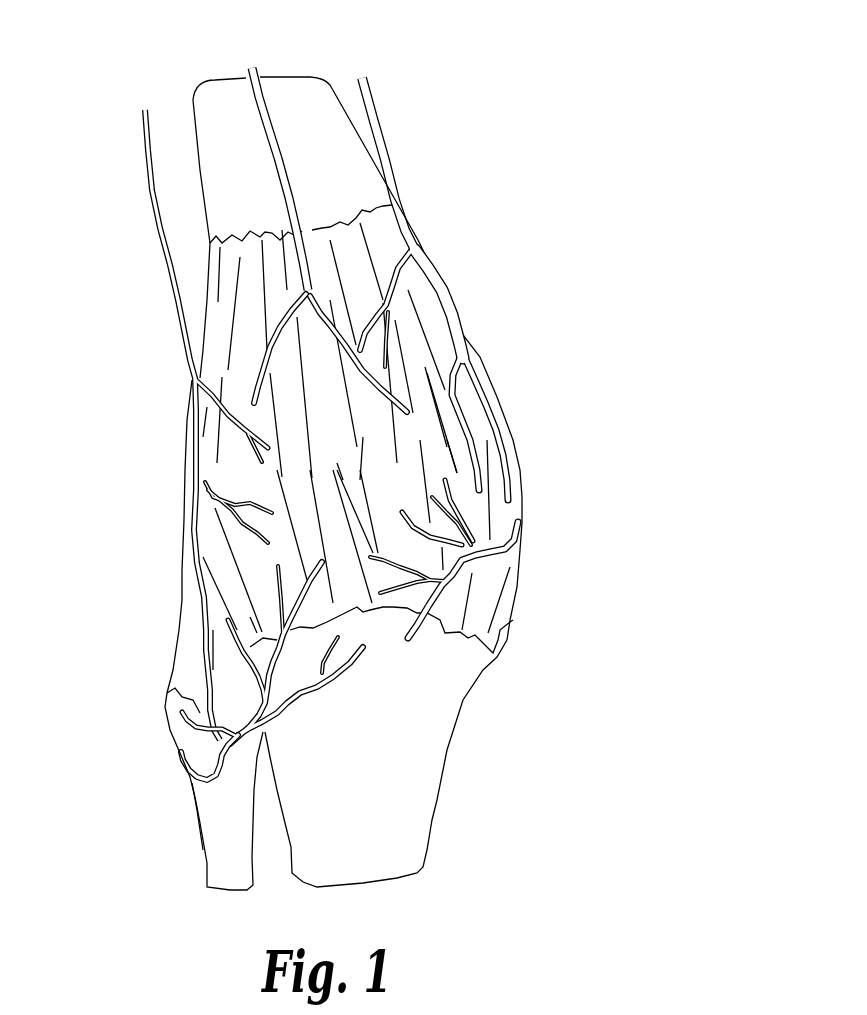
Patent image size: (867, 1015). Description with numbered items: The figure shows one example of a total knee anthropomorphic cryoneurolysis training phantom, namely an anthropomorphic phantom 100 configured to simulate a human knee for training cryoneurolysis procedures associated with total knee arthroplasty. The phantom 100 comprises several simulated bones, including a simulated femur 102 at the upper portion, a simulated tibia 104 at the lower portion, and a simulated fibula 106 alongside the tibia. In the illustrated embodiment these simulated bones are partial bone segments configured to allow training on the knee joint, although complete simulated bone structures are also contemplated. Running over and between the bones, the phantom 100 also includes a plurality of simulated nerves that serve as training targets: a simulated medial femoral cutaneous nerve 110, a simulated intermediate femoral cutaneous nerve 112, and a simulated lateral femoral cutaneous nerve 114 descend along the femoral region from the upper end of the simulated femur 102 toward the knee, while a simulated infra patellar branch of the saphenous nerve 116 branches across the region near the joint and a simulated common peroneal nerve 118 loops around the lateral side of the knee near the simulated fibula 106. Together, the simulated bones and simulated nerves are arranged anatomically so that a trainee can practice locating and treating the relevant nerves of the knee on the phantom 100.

The anthropomorphic phantom 100 is at (581, 247).
The simulated femur 102 is at (300, 98).
The simulated tibia 104 is at (395, 788).
The simulated fibula 106 is at (230, 862).
The simulated medial femoral cutaneous nerve 110 is at (397, 205).
The simulated intermediate femoral cutaneous nerve 112 is at (258, 97).
The simulated lateral femoral cutaneous nerve 114 is at (178, 300).
The simulated infra patellar branch of the saphenous nerve 116 is at (497, 555).
The simulated common peroneal nerve 118 is at (180, 758).